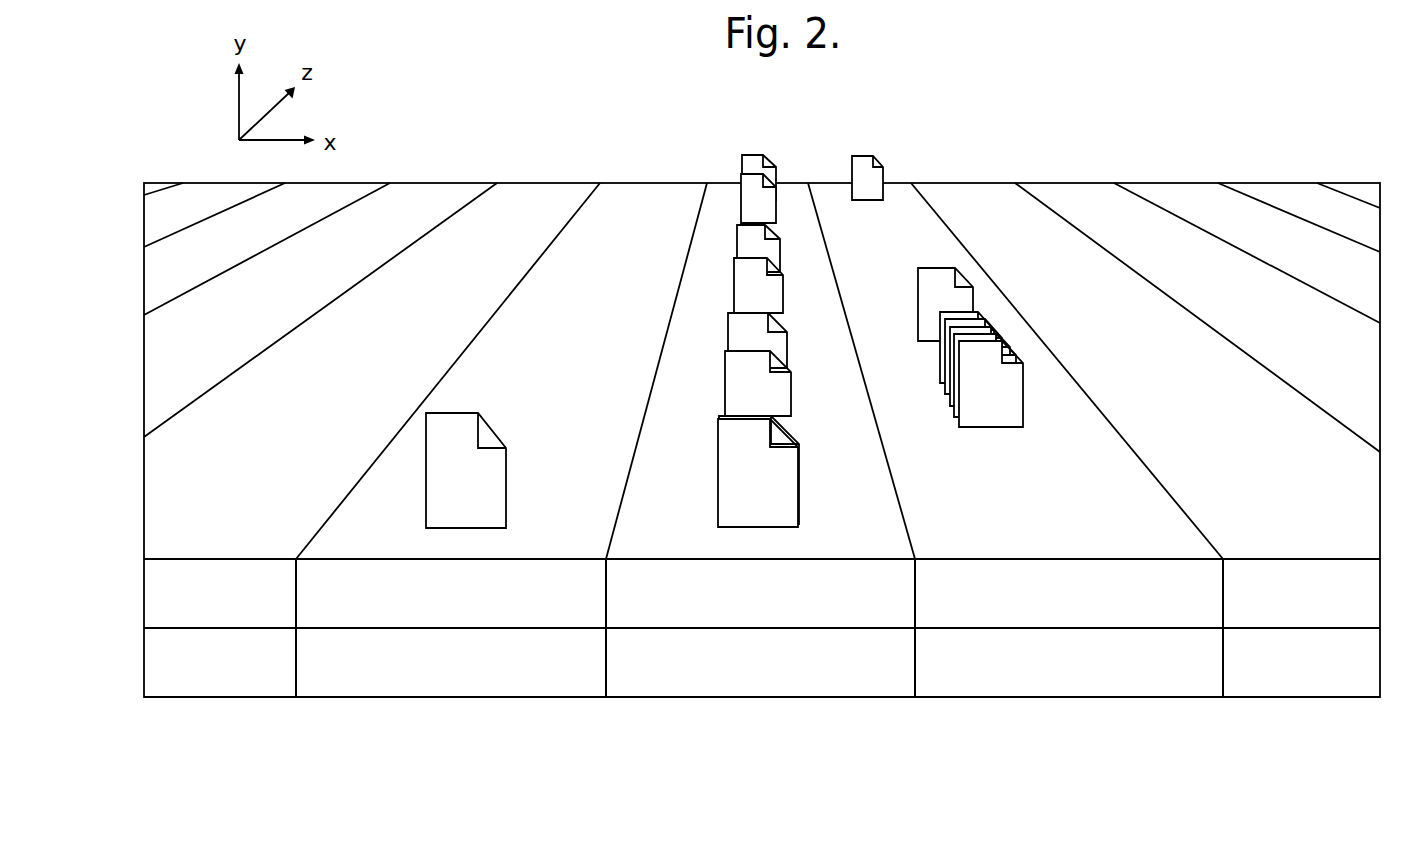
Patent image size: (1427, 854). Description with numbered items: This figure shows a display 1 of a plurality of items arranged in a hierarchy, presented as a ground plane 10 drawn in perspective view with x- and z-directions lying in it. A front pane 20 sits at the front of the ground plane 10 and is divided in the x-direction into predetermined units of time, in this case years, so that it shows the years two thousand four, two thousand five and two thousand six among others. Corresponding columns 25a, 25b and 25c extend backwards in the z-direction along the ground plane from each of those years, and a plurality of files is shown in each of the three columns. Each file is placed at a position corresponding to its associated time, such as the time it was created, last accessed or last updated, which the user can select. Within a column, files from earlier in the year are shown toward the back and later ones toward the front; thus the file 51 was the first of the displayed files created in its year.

The timeline visualization display 1 is at (1148, 126).
The ground plane 10 is at (535, 208).
The file 51 is at (754, 160).
The front pane 20 is at (1383, 559).
The column 25a is at (296, 705).
The column 25b is at (915, 705).
The column 25c is at (1223, 705).